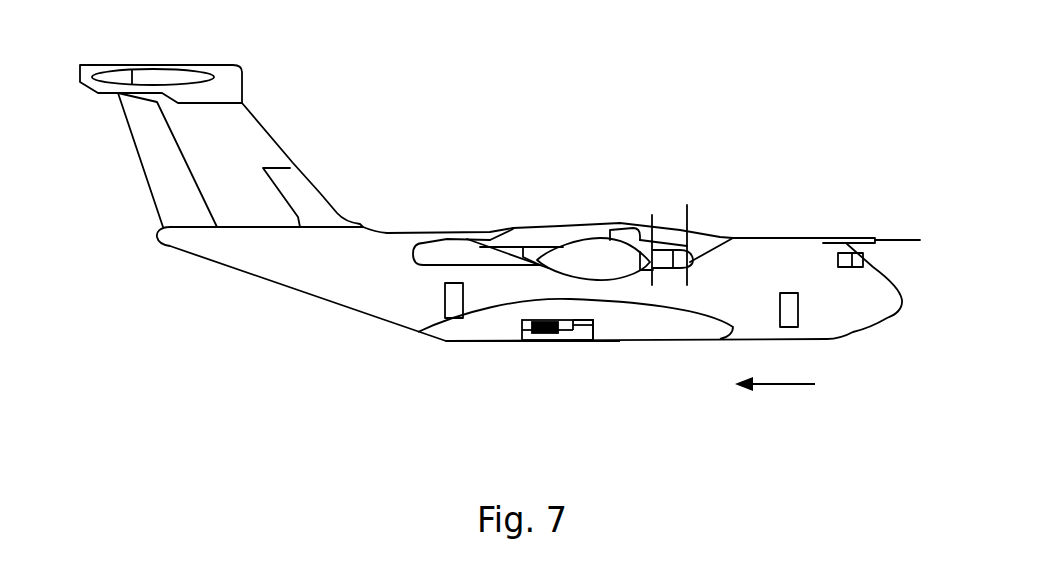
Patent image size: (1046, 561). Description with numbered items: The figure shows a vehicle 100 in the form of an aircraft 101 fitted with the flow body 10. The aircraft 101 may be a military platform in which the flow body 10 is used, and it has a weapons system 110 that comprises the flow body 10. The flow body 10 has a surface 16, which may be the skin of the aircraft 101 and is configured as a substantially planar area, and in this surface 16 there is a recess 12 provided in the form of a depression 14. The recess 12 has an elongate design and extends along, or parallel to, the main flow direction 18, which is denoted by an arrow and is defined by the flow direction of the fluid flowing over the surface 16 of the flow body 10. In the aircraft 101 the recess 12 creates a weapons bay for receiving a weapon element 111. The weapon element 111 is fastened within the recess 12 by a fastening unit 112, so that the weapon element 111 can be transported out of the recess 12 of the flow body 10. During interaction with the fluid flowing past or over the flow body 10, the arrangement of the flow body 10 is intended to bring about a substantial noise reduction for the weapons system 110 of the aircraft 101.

The vehicle 100 is at (500, 177).
The aircraft 101 is at (728, 97).
The flow body 10 is at (455, 332).
The weapons system 110 is at (472, 379).
The surface 16 is at (497, 350).
The recess 12 is at (609, 381).
The depression 14 is at (569, 352).
The weapon element 111 is at (548, 335).
The fastening unit 112 is at (593, 327).
The main flow direction 18 is at (773, 384).